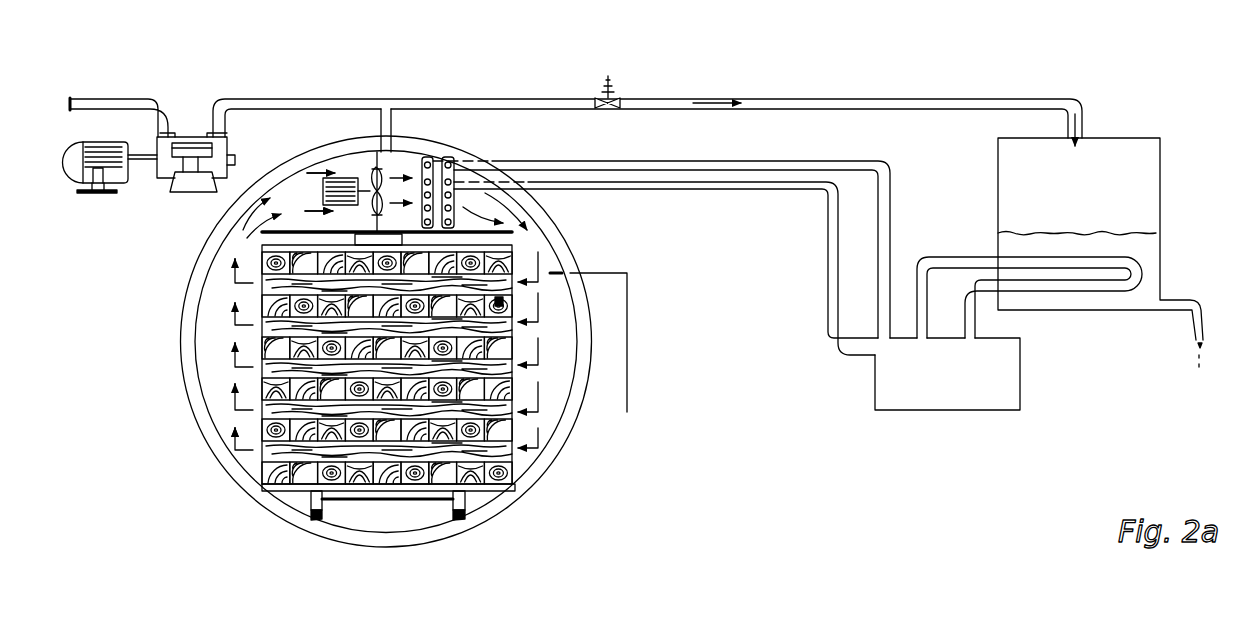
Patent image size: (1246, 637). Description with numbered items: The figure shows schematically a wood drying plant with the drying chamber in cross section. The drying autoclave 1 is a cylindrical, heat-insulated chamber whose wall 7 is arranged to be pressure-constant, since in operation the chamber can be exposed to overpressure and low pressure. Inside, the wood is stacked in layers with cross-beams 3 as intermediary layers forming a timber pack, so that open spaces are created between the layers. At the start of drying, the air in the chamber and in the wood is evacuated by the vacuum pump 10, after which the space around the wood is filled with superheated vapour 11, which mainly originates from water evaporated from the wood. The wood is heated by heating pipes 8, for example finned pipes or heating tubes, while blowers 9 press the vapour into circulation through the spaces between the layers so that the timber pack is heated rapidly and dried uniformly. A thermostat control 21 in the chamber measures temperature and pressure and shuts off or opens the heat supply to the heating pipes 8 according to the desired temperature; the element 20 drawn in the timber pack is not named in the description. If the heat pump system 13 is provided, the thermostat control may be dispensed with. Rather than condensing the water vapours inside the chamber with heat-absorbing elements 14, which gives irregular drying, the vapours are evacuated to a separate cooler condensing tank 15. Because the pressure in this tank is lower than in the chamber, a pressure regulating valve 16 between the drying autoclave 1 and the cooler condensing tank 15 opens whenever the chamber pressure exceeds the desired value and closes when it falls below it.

The drying autoclave 1 is at (181, 377).
The cross-beams 3 is at (277, 448).
The wall 7 is at (533, 470).
The heating pipes 8 is at (450, 165).
The blowers 9 is at (377, 168).
The vacuum pump 10 is at (190, 143).
The superheated vapour 11 is at (234, 272).
The heat pump system 13 is at (932, 412).
The heat-absorbing elements 14 is at (1167, 207).
The cooler condensing tank 15 is at (1105, 151).
The pressure regulating valve 16 is at (612, 97).
The temperature sensor 20 is at (512, 323).
The thermostat control 21 is at (627, 395).